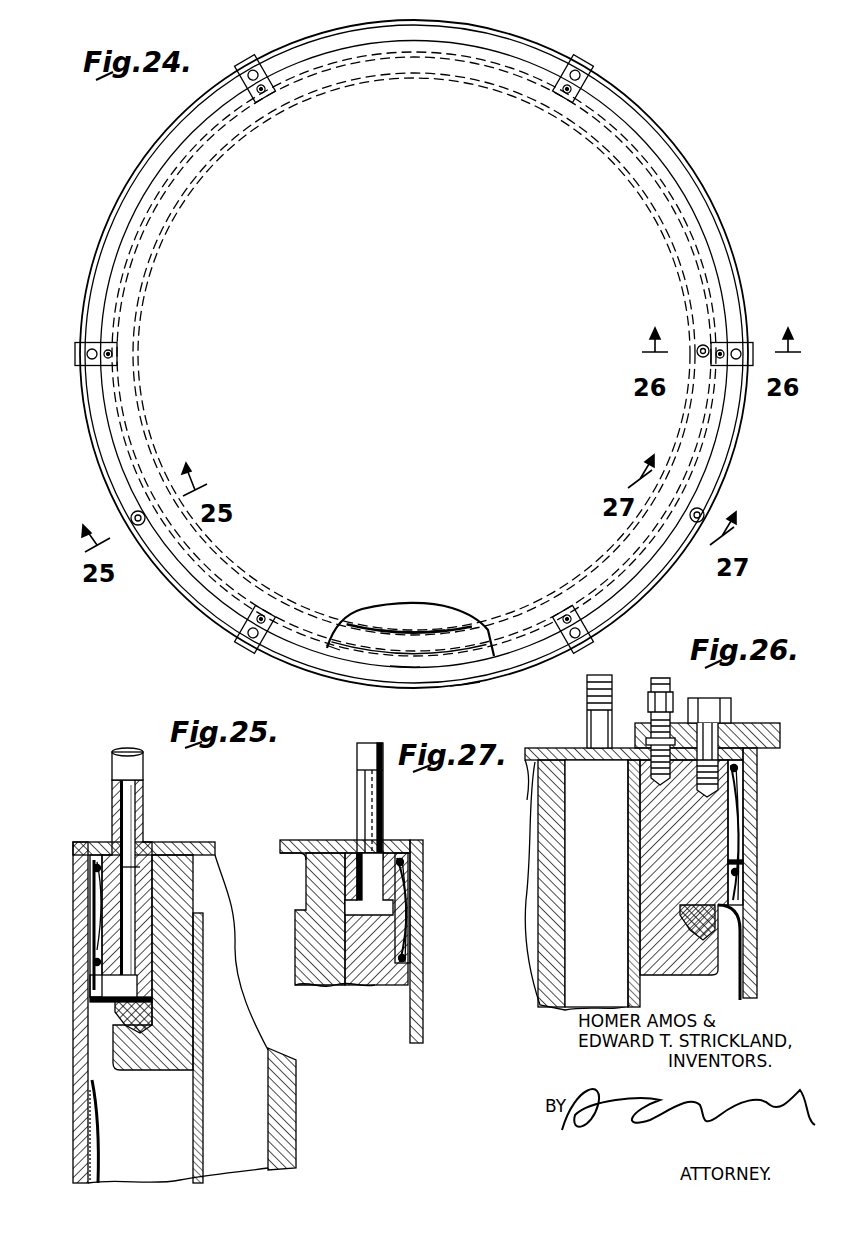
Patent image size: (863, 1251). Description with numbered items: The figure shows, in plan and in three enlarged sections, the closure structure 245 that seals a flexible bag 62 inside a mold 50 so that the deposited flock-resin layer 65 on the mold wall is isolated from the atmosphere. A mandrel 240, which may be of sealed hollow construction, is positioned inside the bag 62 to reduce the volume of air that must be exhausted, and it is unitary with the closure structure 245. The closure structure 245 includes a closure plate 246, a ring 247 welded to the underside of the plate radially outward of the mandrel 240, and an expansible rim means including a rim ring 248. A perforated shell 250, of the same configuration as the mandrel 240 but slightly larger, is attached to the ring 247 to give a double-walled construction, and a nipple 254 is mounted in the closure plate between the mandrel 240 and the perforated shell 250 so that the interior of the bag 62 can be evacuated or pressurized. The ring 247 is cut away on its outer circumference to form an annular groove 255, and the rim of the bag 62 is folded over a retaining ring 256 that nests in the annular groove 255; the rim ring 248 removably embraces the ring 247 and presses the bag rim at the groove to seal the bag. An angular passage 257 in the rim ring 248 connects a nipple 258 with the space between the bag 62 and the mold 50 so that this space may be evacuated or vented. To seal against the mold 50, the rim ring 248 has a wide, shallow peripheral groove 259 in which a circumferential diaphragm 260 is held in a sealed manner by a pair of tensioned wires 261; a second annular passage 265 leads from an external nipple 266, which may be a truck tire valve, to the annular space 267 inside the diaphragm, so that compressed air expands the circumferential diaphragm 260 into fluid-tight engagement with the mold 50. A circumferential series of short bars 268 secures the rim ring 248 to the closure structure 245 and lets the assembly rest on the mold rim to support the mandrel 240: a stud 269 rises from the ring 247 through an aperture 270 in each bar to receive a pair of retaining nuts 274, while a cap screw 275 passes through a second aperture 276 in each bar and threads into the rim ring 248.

In FIG. 24, the mold 50 is at (745, 248).
In FIG. 25, the mold 50 is at (73, 1067).
In FIG. 27, the mold 50 is at (423, 1021).
In FIG. 26, the mold 50 is at (757, 958).
In FIG. 25, the bag 62 is at (100, 1122).
In FIG. 26, the bag 62 is at (733, 990).
In FIG. 25, the flock-resin layer 65 is at (90, 1135).
In FIG. 24, the mandrel 240 is at (376, 628).
In FIG. 25, the mandrel 240 is at (268, 1110).
In FIG. 26, the mandrel 240 is at (540, 830).
In FIG. 24, the closure structure 245 is at (594, 276).
In FIG. 25, the closure structure 245 is at (195, 843).
In FIG. 27, the closure structure 245 is at (282, 856).
In FIG. 26, the closure structure 245 is at (527, 775).
In FIG. 24, the closure plate 246 is at (315, 648).
In FIG. 25, the closure plate 246 is at (212, 858).
In FIG. 27, the closure plate 246 is at (292, 834).
In FIG. 26, the closure plate 246 is at (548, 752).
In FIG. 24, the ring 247 is at (400, 666).
In FIG. 25, the ring 247 is at (185, 893).
In FIG. 27, the ring 247 is at (322, 985).
In FIG. 26, the ring 247 is at (640, 806).
In FIG. 24, the rim ring 248 is at (460, 676).
In FIG. 25, the rim ring 248 is at (100, 858).
In FIG. 27, the rim ring 248 is at (393, 845).
In FIG. 26, the rim ring 248 is at (735, 893).
In FIG. 24, the perforated shell 250 is at (410, 652).
In FIG. 25, the perforated shell 250 is at (203, 1047).
In FIG. 27, the perforated shell 250 is at (300, 950).
In FIG. 26, the perforated shell 250 is at (636, 920).
In FIG. 26, the nipple 254 is at (587, 694).
In FIG. 25, the annular groove 255 is at (150, 1015).
In FIG. 25, the retaining ring 256 is at (150, 1020).
In FIG. 26, the retaining ring 256 is at (683, 930).
In FIG. 25, the angular passage 257 is at (90, 999).
In FIG. 26, the angular passage 257 is at (745, 862).
In FIG. 24, the nipple 258 is at (131, 518).
In FIG. 25, the nipple 258 is at (143, 778).
In FIG. 24, the peripheral groove 259 is at (700, 345).
In FIG. 25, the peripheral groove 259 is at (100, 905).
In FIG. 27, the peripheral groove 259 is at (408, 940).
In FIG. 26, the peripheral groove 259 is at (745, 792).
In FIG. 25, the circumferential diaphragm 260 is at (95, 886).
In FIG. 27, the circumferential diaphragm 260 is at (410, 878).
In FIG. 26, the circumferential diaphragm 260 is at (745, 810).
In FIG. 25, the tensioned wires 261 is at (92, 870).
In FIG. 27, the tensioned wires 261 is at (410, 862).
In FIG. 26, the tensioned wires 261 is at (745, 768).
In FIG. 27, the second annular passage 265 is at (375, 912).
In FIG. 24, the external nipple 266 is at (704, 516).
In FIG. 27, the external nipple 266 is at (357, 790).
In FIG. 27, the annular space 267 is at (403, 900).
In FIG. 26, the annular space 267 is at (745, 832).
In FIG. 24, the short bars 268 is at (252, 62).
In FIG. 26, the short bars 268 is at (772, 724).
In FIG. 24, the stud 269 is at (265, 90).
In FIG. 26, the stud 269 is at (653, 695).
In FIG. 26, the aperture 270 is at (646, 740).
In FIG. 24, the retaining nuts 274 is at (262, 95).
In FIG. 26, the retaining nuts 274 is at (648, 712).
In FIG. 24, the cap screw 275 is at (575, 62).
In FIG. 26, the cap screw 275 is at (722, 699).
In FIG. 24, the second aperture 276 is at (240, 78).
In FIG. 26, the second aperture 276 is at (735, 724).